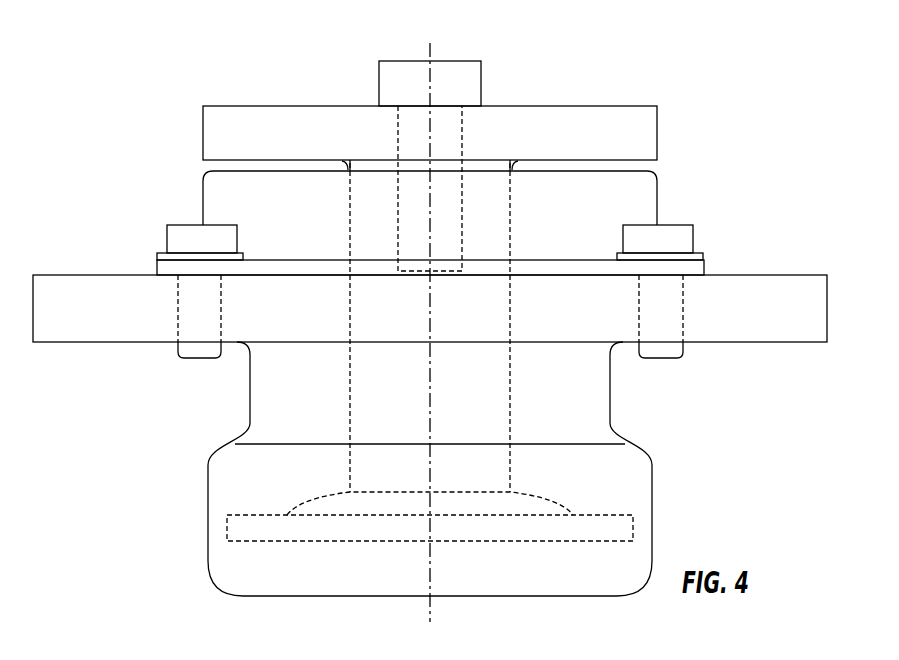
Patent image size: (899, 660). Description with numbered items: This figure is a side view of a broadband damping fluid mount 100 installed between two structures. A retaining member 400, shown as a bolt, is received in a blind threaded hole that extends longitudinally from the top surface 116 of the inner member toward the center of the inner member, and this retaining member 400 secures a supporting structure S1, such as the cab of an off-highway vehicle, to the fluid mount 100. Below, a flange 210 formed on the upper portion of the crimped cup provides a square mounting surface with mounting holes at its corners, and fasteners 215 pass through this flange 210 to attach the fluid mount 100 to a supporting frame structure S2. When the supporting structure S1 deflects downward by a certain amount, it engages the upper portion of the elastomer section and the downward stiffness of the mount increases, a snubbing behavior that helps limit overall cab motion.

The broadband damping fluid mount 100 is at (698, 481).
The top surface 116 is at (257, 170).
The flange 210 is at (704, 270).
The fasteners / bolts 215 is at (167, 351).
The retaining member 400 is at (460, 61).
The supporting structure S1 is at (657, 108).
The supporting frame structure S2 is at (828, 279).